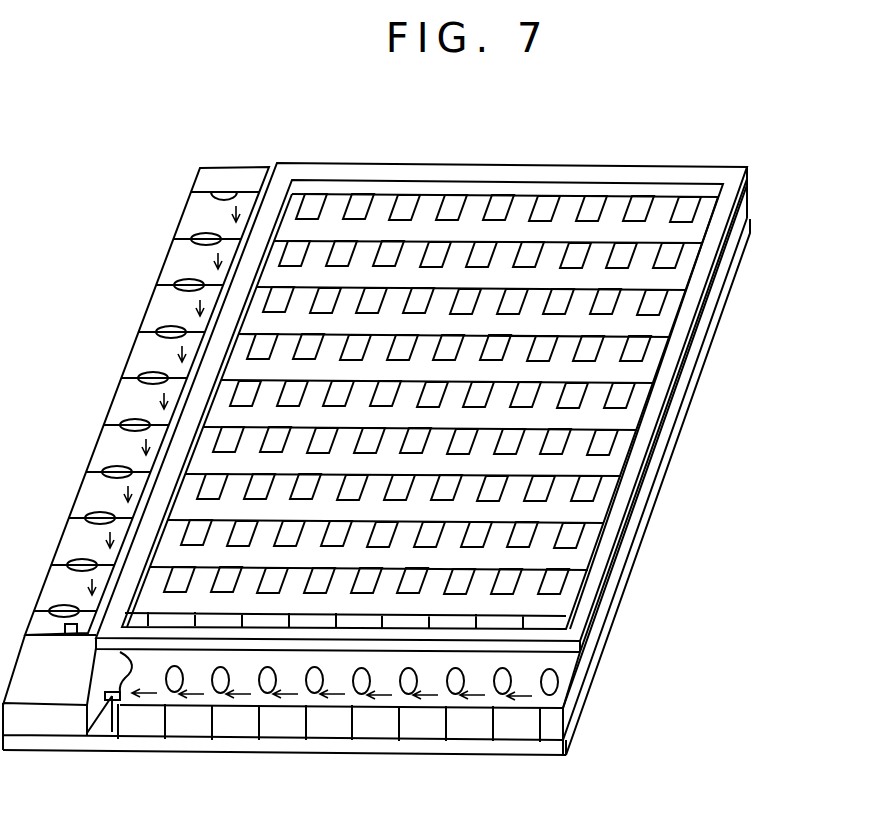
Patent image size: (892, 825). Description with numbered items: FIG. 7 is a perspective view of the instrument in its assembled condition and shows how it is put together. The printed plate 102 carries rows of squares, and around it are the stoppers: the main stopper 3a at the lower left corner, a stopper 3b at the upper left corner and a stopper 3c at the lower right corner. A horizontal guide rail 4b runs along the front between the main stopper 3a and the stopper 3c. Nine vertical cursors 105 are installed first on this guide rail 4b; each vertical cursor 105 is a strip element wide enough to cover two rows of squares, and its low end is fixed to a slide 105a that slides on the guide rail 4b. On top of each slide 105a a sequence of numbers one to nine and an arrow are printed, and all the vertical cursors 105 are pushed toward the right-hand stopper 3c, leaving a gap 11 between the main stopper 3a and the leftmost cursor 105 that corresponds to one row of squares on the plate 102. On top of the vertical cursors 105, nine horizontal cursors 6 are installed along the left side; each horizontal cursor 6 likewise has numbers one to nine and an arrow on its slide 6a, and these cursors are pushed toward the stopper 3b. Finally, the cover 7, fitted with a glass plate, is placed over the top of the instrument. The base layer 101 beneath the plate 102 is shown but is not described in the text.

The cover 7 is at (560, 167).
The horizontal cursor 6 is at (428, 228).
The slide 6a is at (108, 440).
The stopper 3b is at (237, 183).
The stopper 3c is at (560, 688).
The main stopper 3a is at (57, 690).
The gap 11 is at (98, 722).
The guide rail 4b is at (113, 703).
The vertical cursor 105 is at (350, 626).
The slide 105a is at (500, 722).
The base plate 101 is at (290, 745).
The plate 102 is at (640, 507).